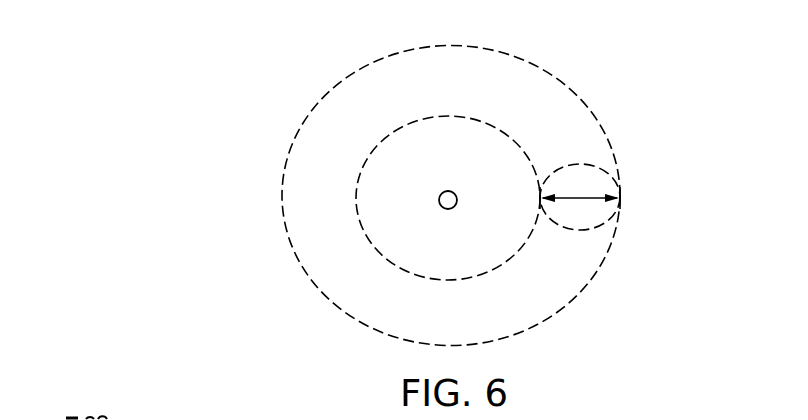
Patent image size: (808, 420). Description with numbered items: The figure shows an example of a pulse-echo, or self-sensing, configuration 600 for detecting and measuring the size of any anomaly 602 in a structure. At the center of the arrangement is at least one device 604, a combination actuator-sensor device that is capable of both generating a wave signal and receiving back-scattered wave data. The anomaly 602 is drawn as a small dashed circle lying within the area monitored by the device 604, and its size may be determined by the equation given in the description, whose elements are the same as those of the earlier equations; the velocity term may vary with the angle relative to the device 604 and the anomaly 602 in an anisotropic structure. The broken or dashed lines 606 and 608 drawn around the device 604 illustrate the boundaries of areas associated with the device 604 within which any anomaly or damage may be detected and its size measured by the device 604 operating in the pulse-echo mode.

The pulse-echo (self-sensing) configuration 600 is at (498, 196).
The anomaly 602 is at (577, 232).
The device 604 is at (446, 191).
The dashed line 606 is at (447, 280).
The dashed line 608 is at (290, 248).